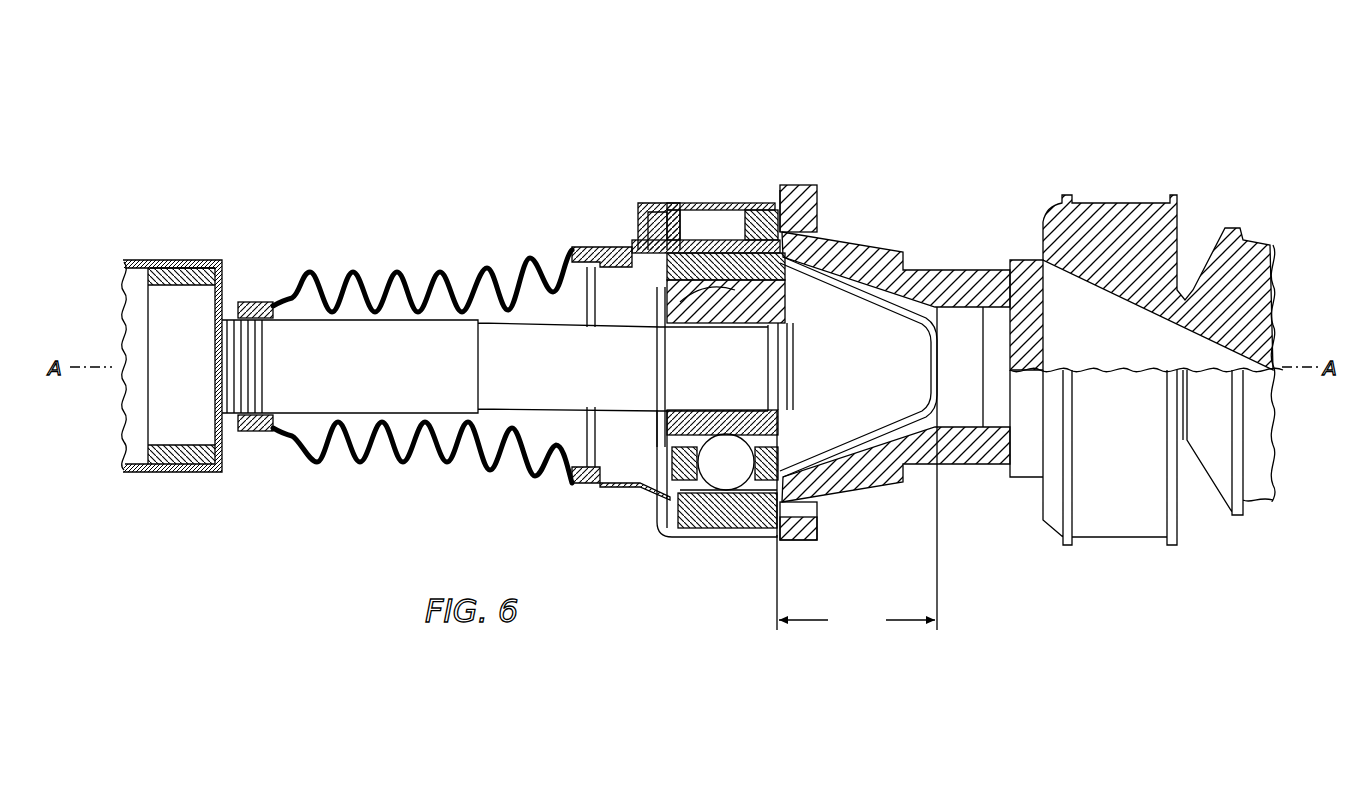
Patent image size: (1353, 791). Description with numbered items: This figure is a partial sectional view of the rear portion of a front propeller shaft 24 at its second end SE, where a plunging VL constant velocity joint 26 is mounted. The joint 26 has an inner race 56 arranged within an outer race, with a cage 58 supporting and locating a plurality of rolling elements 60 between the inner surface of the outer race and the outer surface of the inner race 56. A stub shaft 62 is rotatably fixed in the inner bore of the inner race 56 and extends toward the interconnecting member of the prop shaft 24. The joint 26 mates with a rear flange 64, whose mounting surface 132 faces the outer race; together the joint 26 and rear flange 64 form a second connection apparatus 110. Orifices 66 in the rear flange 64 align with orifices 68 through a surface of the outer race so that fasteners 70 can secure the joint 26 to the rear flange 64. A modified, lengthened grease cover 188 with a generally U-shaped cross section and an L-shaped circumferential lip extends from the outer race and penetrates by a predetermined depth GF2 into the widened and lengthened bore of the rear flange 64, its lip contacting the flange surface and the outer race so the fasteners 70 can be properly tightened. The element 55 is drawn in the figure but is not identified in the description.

The front propeller shaft 24 is at (140, 261).
The second end SE is at (200, 261).
The stub shaft 62 is at (453, 385).
The inner race 56 is at (690, 285).
The cage 58 is at (660, 490).
The outer race 55 is at (700, 513).
The rolling elements 60 is at (723, 470).
The fasteners 70 is at (650, 205).
The orifices 68 is at (750, 205).
The mounting surface 132 is at (776, 192).
The orifices 66 is at (815, 215).
The rear flange 64 is at (860, 467).
The modified grease cover 188 is at (937, 335).
The second connection apparatus 110 is at (691, 124).
The plunging VL constant velocity joint 26 is at (710, 612).
The predetermined depth GF2 is at (857, 470).